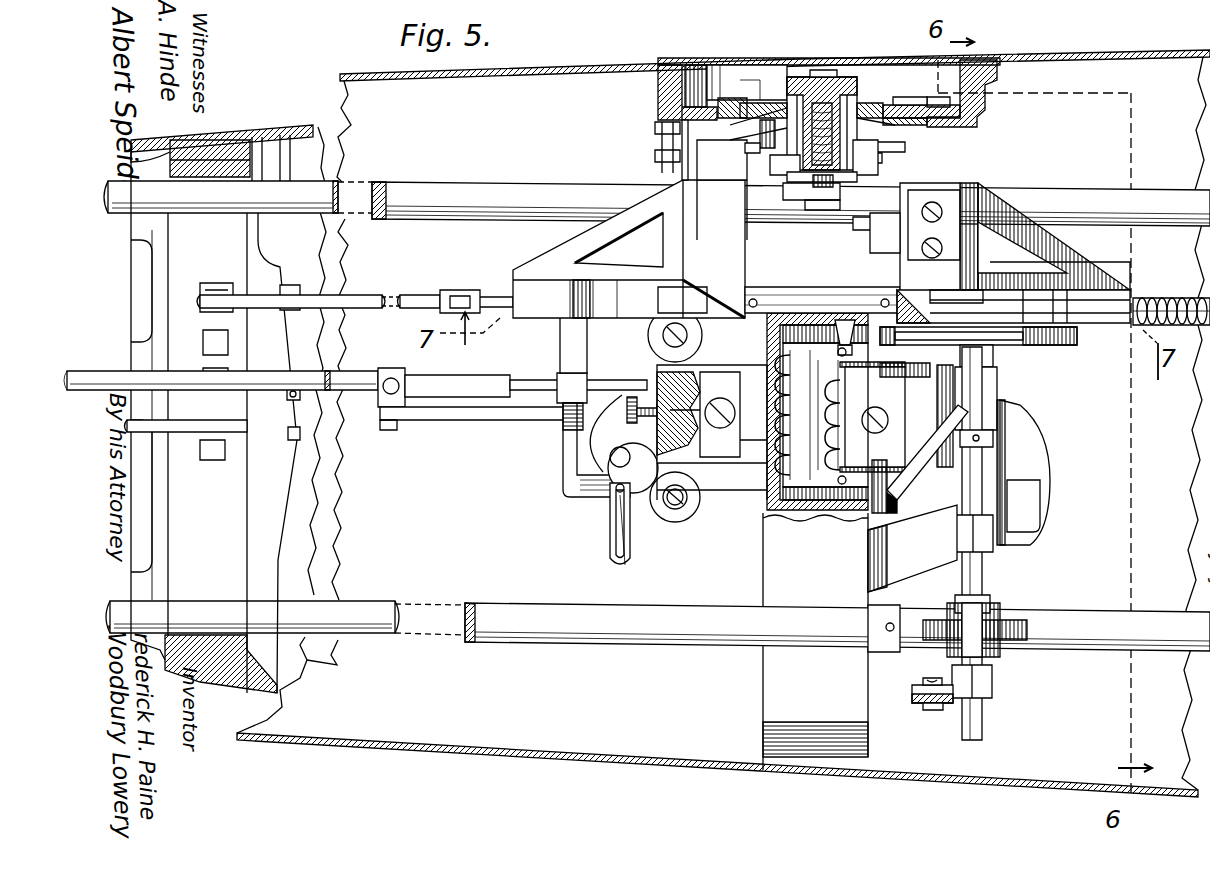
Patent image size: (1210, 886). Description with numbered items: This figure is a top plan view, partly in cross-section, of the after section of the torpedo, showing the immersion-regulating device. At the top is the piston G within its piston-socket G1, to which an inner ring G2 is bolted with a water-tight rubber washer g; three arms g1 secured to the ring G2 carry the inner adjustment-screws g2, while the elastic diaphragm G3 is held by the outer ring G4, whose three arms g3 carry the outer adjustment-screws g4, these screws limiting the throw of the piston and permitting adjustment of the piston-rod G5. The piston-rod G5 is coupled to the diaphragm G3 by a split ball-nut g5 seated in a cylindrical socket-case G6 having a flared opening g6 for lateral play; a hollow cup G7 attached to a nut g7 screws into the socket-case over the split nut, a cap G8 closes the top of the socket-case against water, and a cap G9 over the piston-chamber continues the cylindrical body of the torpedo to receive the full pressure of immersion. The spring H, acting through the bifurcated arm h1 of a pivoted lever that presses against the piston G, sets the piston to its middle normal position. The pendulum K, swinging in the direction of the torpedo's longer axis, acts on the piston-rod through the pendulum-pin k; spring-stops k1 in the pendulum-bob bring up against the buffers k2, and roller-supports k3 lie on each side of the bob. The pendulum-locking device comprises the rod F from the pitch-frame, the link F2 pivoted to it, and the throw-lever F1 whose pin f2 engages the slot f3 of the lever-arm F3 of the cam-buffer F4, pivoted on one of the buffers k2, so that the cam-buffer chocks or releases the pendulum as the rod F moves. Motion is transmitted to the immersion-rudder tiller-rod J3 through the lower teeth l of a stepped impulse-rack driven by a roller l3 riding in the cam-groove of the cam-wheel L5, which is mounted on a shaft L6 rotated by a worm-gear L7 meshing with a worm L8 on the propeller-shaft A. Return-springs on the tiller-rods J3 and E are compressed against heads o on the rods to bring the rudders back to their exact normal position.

The propeller-shaft A is at (515, 198).
The tiller-rod E is at (445, 308).
The horizontal immersion-rudder tiller-rod J3 is at (196, 432).
The rod F is at (476, 392).
The link F2 is at (472, 412).
The throw-lever F1 is at (562, 458).
The lever-arm F3 is at (632, 563).
The cam-buffer F4 is at (660, 462).
The pin f2 is at (610, 497).
The slot f3 is at (666, 515).
The pendulum-pin k is at (830, 340).
The spring-stops k1 is at (648, 400).
The buffers k2 is at (627, 415).
The roller-supports k3 is at (650, 335).
The pendulum K is at (700, 378).
The spring H is at (852, 440).
The piston G is at (658, 112).
The piston-socket G1 is at (990, 108).
The inner ring G2 is at (975, 128).
The elastic diaphragm G3 is at (910, 105).
The outer ring G4 is at (910, 83).
The piston-rod G5 is at (812, 212).
The cylindrical socket-case G6 is at (790, 198).
The hollow cup G7 is at (745, 52).
The cap G8 is at (818, 77).
The cap G9 is at (690, 58).
The rubber washer g is at (905, 165).
The arms g1 is at (760, 135).
The inner adjustment-screws g2 is at (750, 153).
The arms g3 is at (740, 108).
The outer adjustment-screws g4 is at (690, 85).
The split ball-nut g5 is at (825, 200).
The flared opening g6 is at (790, 182).
The nut g7 is at (740, 98).
The bifurcated arm h1 is at (770, 165).
The head o is at (1138, 300).
The lower teeth l is at (1070, 345).
The roller l3 is at (915, 345).
The cam-wheel L5 is at (1000, 350).
The shaft L6 is at (998, 450).
The worm-gear L7 is at (1010, 625).
The worm L8 is at (1000, 655).